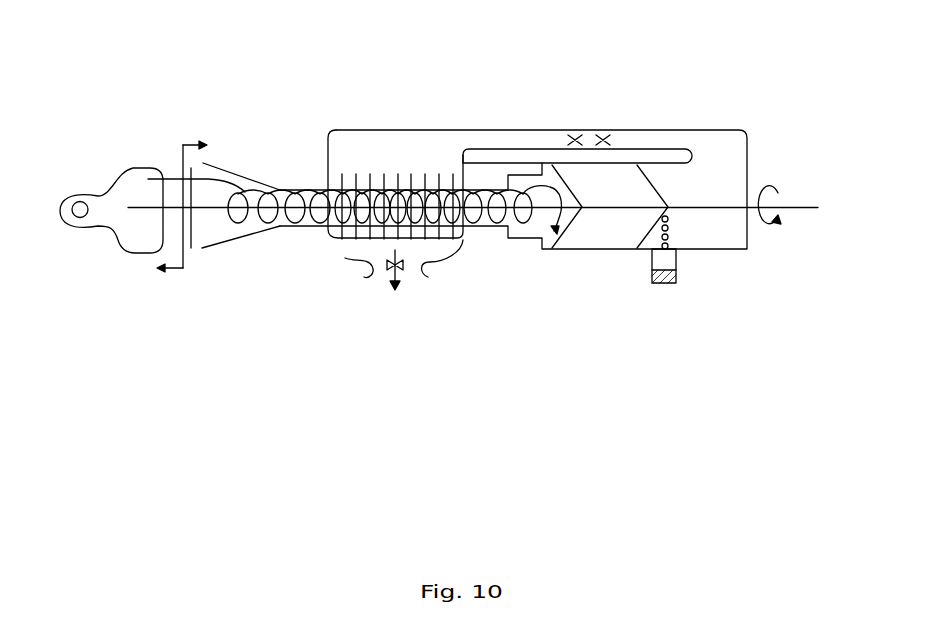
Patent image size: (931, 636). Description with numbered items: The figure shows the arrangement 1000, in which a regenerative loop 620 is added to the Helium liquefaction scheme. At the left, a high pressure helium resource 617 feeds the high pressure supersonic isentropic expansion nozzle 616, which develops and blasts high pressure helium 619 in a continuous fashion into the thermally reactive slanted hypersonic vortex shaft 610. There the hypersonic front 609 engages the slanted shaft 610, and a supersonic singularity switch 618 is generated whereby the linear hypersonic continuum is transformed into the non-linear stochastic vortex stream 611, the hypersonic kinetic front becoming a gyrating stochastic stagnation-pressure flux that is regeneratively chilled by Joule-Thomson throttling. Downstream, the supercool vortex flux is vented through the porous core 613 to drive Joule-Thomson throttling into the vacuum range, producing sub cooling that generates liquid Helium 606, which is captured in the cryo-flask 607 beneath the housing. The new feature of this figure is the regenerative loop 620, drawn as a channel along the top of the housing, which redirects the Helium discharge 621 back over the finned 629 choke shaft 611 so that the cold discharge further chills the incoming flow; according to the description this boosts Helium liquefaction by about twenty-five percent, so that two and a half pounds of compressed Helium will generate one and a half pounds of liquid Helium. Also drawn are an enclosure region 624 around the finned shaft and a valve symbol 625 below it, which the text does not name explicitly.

The regenerative loop arrangement 1000 is at (128, 378).
The high pressure supersonic isentropic expansion nozzle 616 is at (118, 174).
The high pressure helium resource 617 is at (80, 217).
The supersonic singularity switch 618 is at (193, 253).
The high pressure helium 619 is at (143, 170).
The hypersonic front 609 is at (186, 144).
The thermally reactive slanted hypersonic vortex shaft 610 is at (232, 172).
The non-linear stochastic vortex stream 611 is at (295, 190).
The fins 629 is at (407, 175).
The regenerative loop 620 is at (542, 130).
The box 624 is at (343, 258).
The valve 625 is at (408, 272).
The Helium discharge 621 is at (637, 130).
The porous core 613 is at (682, 176).
The liquid Helium 606 is at (715, 232).
The cryo-flask 607 is at (663, 285).